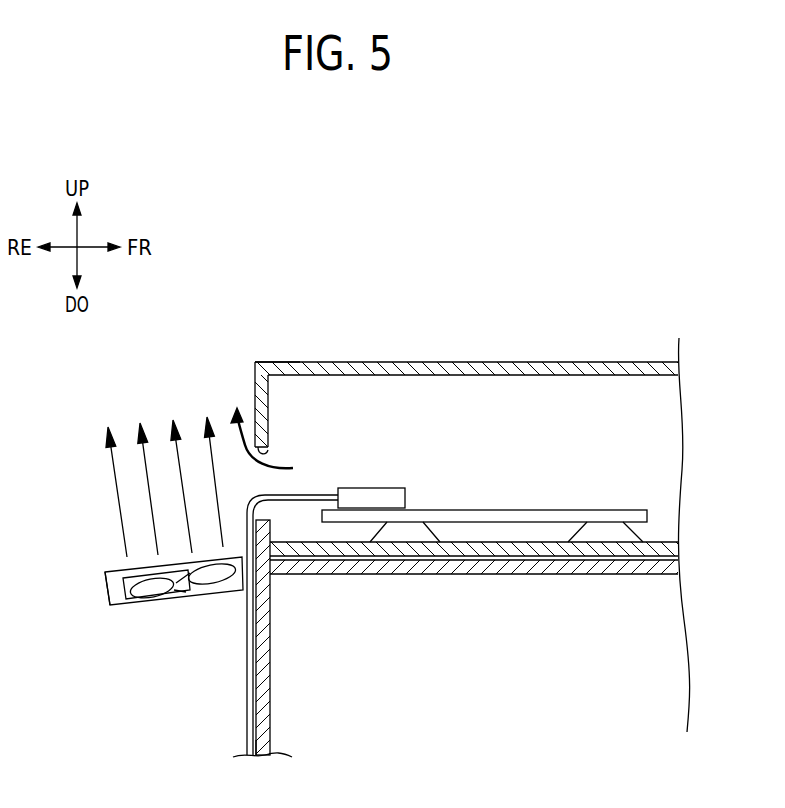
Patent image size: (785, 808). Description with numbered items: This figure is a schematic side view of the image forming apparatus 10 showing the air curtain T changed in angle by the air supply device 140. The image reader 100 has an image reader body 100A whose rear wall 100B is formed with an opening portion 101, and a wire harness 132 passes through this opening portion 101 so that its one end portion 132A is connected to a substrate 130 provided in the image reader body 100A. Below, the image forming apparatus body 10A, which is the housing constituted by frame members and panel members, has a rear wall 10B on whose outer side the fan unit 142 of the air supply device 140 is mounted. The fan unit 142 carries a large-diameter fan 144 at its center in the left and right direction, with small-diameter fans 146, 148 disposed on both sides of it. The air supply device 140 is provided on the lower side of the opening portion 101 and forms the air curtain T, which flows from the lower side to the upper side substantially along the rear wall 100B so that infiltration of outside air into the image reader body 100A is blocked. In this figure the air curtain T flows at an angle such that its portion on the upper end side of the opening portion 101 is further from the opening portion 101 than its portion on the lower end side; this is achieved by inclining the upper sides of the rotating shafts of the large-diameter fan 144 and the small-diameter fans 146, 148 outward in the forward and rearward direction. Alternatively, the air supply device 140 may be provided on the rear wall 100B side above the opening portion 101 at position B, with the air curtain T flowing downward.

The image forming apparatus 10 is at (628, 319).
The image forming apparatus body 10A is at (628, 580).
The rear wall 10B is at (258, 727).
The image reader 100 is at (465, 355).
The image reader body 100A is at (256, 362).
The rear wall 100B is at (255, 379).
The opening portion 101 is at (270, 452).
The substrate 130 is at (522, 510).
The wire harness 132 is at (249, 695).
The one end portion 132A is at (374, 488).
The air supply device 140 is at (140, 617).
The fan unit 142 is at (108, 582).
The large-diameter fan 144 is at (176, 610).
The small-diameter fan 146 is at (152, 588).
The small-diameter fan 148 is at (212, 574).
The air curtain T is at (118, 500).
The position B is at (274, 447).